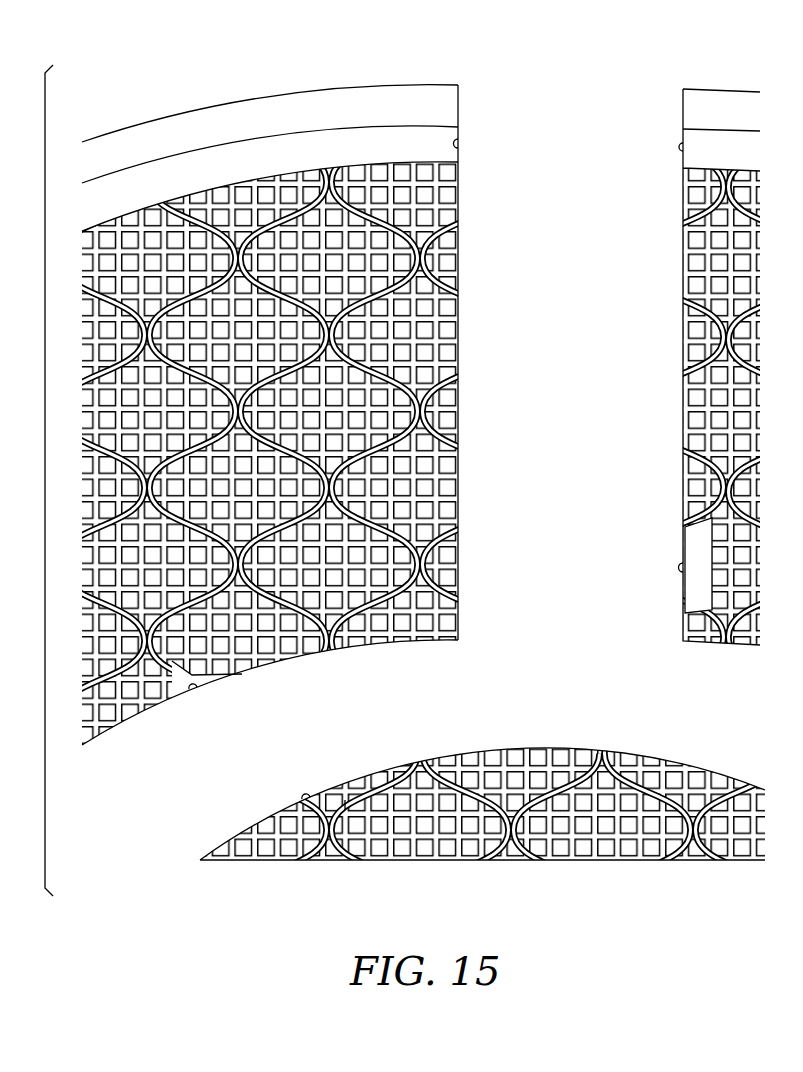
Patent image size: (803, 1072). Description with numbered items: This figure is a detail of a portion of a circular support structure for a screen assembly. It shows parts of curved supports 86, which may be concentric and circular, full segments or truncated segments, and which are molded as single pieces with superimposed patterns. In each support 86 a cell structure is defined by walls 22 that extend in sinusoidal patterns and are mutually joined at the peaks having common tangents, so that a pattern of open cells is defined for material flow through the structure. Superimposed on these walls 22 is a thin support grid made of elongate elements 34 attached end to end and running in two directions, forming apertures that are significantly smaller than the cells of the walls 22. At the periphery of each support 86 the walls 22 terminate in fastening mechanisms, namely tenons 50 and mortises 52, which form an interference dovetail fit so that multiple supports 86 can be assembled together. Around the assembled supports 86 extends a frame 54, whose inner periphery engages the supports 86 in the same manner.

The frame 54 is at (367, 103).
The mortise 52 is at (463, 143).
The tenon 50 is at (678, 147).
The support 86 is at (460, 200).
The wall 22 is at (452, 242).
The elongate element 34 is at (452, 328).